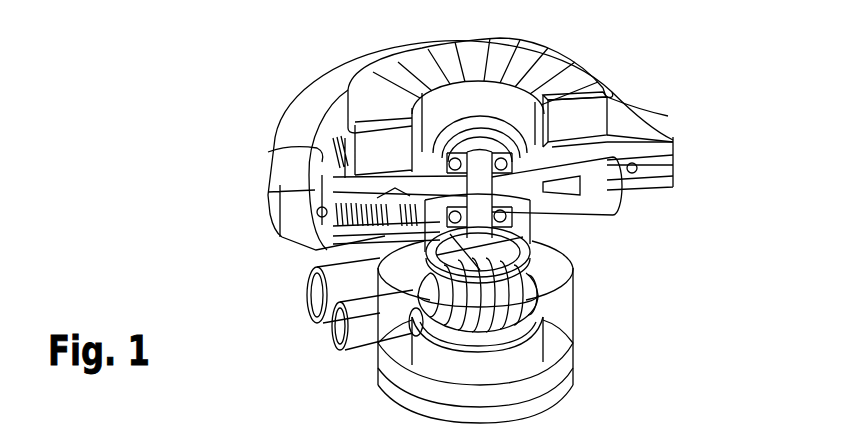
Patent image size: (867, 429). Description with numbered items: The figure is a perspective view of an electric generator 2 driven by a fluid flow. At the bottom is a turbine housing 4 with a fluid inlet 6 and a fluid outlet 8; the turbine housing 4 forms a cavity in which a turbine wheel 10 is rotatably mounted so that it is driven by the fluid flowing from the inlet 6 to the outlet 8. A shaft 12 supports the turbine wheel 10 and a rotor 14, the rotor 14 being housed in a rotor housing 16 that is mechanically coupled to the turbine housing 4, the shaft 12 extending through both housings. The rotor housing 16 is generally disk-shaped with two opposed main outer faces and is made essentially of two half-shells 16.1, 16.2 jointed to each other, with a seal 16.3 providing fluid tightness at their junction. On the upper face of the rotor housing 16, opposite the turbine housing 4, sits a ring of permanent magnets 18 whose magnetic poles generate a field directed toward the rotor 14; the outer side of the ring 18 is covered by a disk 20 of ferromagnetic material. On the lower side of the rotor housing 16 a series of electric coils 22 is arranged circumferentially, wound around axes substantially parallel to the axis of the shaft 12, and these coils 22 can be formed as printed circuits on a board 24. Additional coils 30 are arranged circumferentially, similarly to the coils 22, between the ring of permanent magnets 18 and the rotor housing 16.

The electric generator 2 is at (250, 103).
The turbine housing 4 is at (575, 333).
The fluid inlet 6 is at (330, 335).
The fluid outlet 8 is at (305, 292).
The turbine wheel 10 is at (545, 316).
The shaft 12 is at (477, 160).
The rotor 14 is at (597, 213).
The rotor housing 16 is at (257, 188).
The half-shell 16.1 is at (660, 158).
The half-shell 16.2 is at (658, 182).
The seal 16.3 is at (647, 187).
The ring of permanent magnets 18 is at (592, 110).
The disk 20 is at (575, 63).
The electric coils 22 is at (280, 225).
The board 24 is at (550, 217).
The additional coils 30 is at (333, 152).